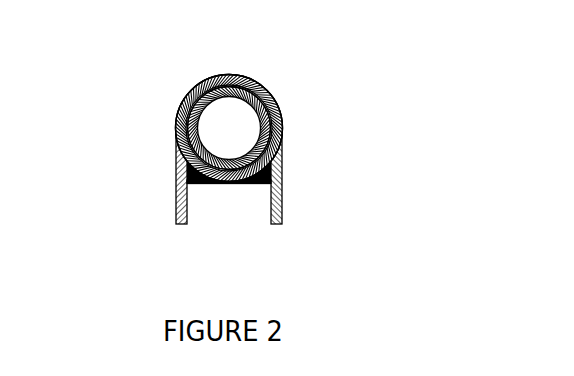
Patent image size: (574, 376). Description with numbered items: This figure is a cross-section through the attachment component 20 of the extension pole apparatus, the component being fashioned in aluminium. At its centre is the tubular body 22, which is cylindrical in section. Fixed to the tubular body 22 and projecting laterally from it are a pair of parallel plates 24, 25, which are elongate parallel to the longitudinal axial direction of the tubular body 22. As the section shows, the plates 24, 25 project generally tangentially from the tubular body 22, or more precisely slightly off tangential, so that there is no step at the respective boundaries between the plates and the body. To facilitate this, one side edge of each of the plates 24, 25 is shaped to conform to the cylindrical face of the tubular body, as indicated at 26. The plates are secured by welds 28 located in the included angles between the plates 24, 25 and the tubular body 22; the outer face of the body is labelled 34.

The seal assembly 20 is at (241, 126).
The outer tubular layer 22 is at (175, 117).
The right leg 24 is at (282, 213).
The left leg 25 is at (176, 211).
The inner tubular layer 26 is at (196, 140).
The bond region 28 is at (282, 170).
The outer surface 34 is at (283, 120).